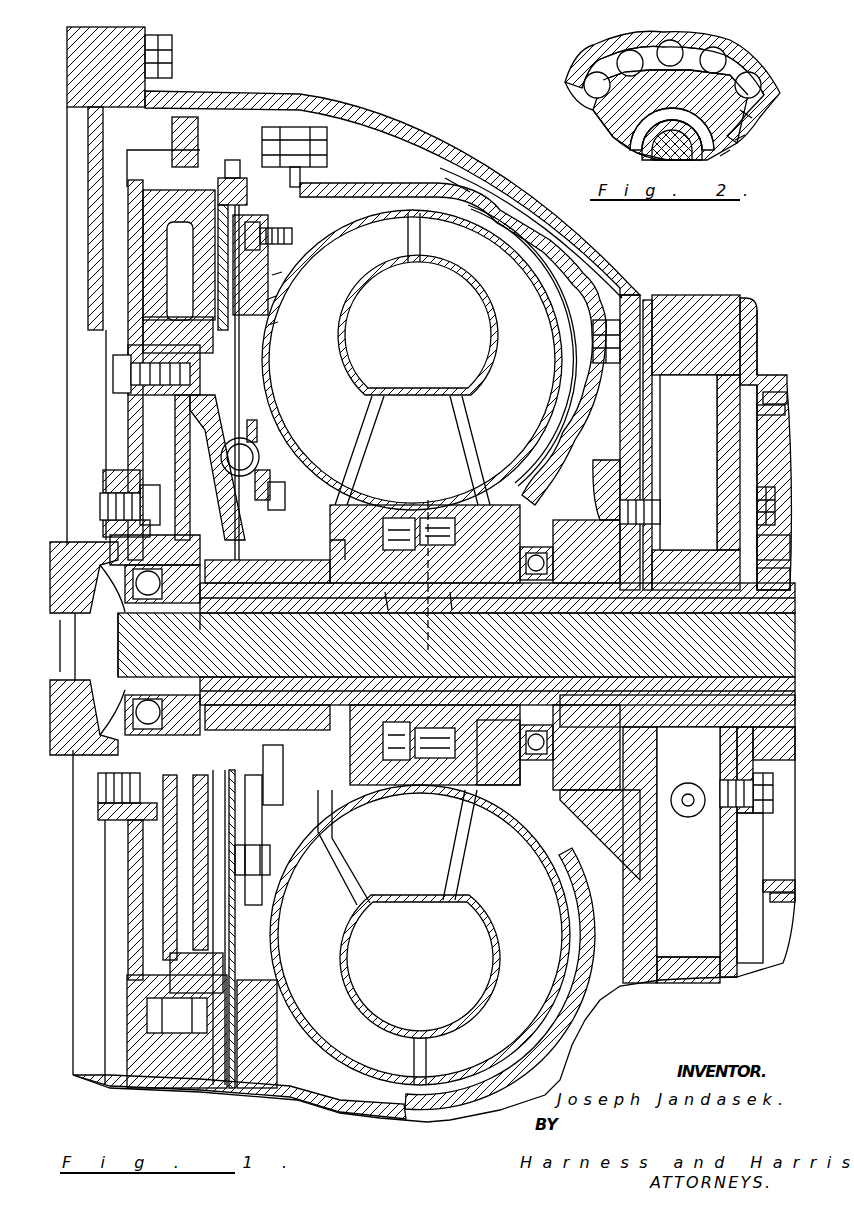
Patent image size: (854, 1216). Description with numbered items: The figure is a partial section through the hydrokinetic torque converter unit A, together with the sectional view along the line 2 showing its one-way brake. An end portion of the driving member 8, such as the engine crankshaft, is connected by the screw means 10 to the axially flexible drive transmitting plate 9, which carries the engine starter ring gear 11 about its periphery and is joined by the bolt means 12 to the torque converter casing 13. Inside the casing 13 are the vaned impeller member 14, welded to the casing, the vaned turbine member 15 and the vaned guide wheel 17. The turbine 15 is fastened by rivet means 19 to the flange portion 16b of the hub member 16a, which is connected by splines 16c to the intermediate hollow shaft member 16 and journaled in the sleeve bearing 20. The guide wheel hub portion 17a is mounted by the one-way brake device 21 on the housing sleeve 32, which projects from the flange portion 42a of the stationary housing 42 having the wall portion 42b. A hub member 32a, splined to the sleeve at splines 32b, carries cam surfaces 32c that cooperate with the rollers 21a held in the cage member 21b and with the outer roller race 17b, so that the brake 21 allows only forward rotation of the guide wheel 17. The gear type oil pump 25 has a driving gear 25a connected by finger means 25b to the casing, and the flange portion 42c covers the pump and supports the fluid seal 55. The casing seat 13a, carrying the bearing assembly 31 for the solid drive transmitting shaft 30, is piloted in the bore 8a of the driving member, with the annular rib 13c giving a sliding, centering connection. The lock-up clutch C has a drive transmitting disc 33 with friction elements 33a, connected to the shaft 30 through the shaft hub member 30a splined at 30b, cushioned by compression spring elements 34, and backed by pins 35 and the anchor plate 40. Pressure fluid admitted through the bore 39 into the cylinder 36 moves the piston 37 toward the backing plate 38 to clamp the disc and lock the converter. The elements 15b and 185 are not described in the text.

In FIG. 1, the driving member 8 is at (62, 752).
In FIG. 1, the bore 8a is at (75, 545).
In FIG. 1, the drive transmitting plate 9 is at (130, 430).
In FIG. 1, the screw means 10 is at (100, 500).
In FIG. 1, the engine starter ring gear 11 is at (170, 140).
In FIG. 1, the bolt means 12 is at (112, 374).
In FIG. 1, the torque converter casing 13 is at (322, 184).
In FIG. 1, the casing seat 13a is at (92, 622).
In FIG. 1, the annular rib 13c is at (130, 760).
In FIG. 1, the impeller member 14 is at (540, 368).
In FIG. 1, the turbine member 15 is at (322, 348).
In FIG. 1, the bearing 15b is at (553, 745).
In FIG. 1, the intermediate hollow shaft member 16 is at (555, 605).
In FIG. 2, the intermediate hollow shaft member 16 is at (640, 148).
In FIG. 1, the hub member 16a is at (337, 547).
In FIG. 1, the flange portion 16b is at (273, 460).
In FIG. 1, the splines 16c is at (267, 645).
In FIG. 1, the guide wheel 17 is at (418, 465).
In FIG. 1, the guide wheel hub portion 17a is at (365, 526).
In FIG. 2, the guide wheel hub portion 17a is at (728, 45).
In FIG. 1, the outer roller race 17b is at (445, 518).
In FIG. 2, the outer roller race 17b is at (748, 68).
In FIG. 1, the rivet means 19 is at (283, 500).
In FIG. 1, the sleeve bearing 20 is at (276, 775).
In FIG. 1, the one-way brake device 21 is at (398, 518).
In FIG. 2, the one-way brake device 21 is at (561, 106).
In FIG. 2, the rollers 21a is at (585, 80).
In FIG. 2, the cage member 21b is at (632, 50).
In FIG. 1, the section line 2— 2 is at (445, 660).
In FIG. 1, the gear type oil pump 25 is at (640, 520).
In FIG. 1, the driving gear 25a is at (596, 792).
In FIG. 1, the finger means 25b is at (660, 708).
In FIG. 1, the solid drive transmitting shaft 30 is at (340, 658).
In FIG. 2, the solid drive transmitting shaft 30 is at (700, 158).
In FIG. 1, the shaft hub member 30a is at (232, 540).
In FIG. 1, the splines 30b is at (188, 622).
In FIG. 1, the bearing assembly 31 is at (162, 672).
In FIG. 1, the housing sleeve 32 is at (680, 700).
In FIG. 2, the housing sleeve 32 is at (732, 154).
In FIG. 1, the hub member 32a is at (455, 612).
In FIG. 2, the hub member 32a is at (745, 138).
In FIG. 1, the splines 32b is at (386, 612).
In FIG. 2, the splines 32b is at (628, 125).
In FIG. 2, the cam surfaces 32c is at (750, 120).
In FIG. 1, the drive transmitting disc 33 is at (240, 386).
In FIG. 1, the friction elements 33a is at (248, 978).
In FIG. 1, the compression spring elements 34 is at (228, 455).
In FIG. 1, the pins 35 is at (290, 852).
In FIG. 1, the pressure fluid receiving cylinder 36 is at (175, 268).
In FIG. 1, the piston 37 is at (228, 322).
In FIG. 1, the backing plate 38 is at (290, 290).
In FIG. 1, the bore 39 is at (185, 896).
In FIG. 1, the anchor plate 40 is at (265, 800).
In FIG. 1, the housing 42 is at (718, 296).
In FIG. 1, the flange portion 42a is at (722, 438).
In FIG. 1, the wall portion 42b is at (626, 425).
In FIG. 1, the flange portion 42c is at (540, 545).
In FIG. 1, the fluid seal 55 is at (505, 765).
In FIG. 1, the passage 185 is at (688, 817).
In FIG. 1, the hydrokinetic torque converter unit A is at (440, 172).
In FIG. 1, the torque converter lock-up clutch C is at (292, 240).